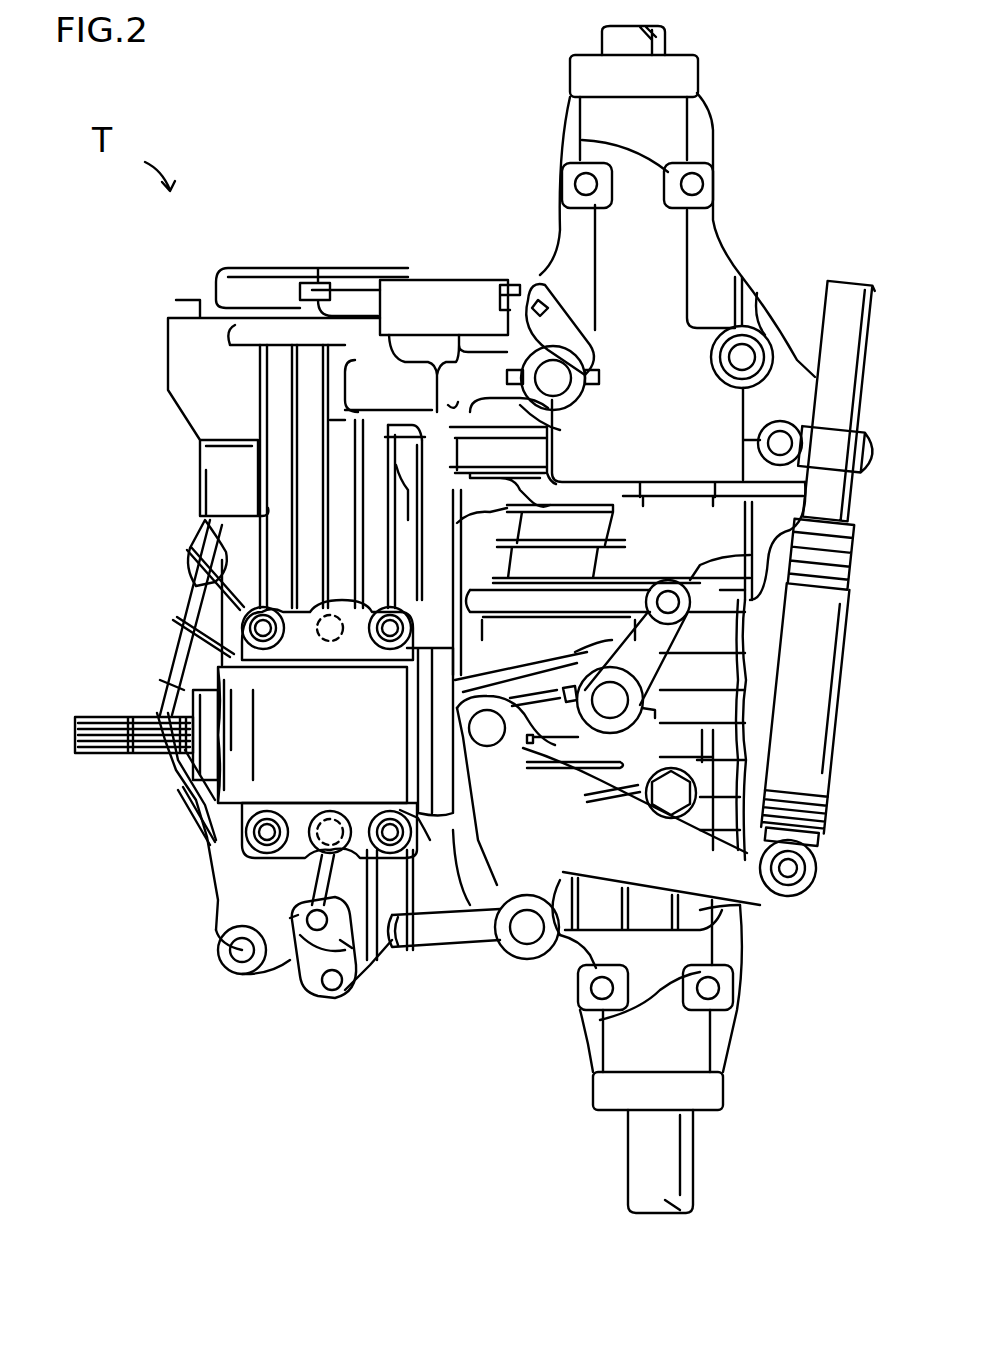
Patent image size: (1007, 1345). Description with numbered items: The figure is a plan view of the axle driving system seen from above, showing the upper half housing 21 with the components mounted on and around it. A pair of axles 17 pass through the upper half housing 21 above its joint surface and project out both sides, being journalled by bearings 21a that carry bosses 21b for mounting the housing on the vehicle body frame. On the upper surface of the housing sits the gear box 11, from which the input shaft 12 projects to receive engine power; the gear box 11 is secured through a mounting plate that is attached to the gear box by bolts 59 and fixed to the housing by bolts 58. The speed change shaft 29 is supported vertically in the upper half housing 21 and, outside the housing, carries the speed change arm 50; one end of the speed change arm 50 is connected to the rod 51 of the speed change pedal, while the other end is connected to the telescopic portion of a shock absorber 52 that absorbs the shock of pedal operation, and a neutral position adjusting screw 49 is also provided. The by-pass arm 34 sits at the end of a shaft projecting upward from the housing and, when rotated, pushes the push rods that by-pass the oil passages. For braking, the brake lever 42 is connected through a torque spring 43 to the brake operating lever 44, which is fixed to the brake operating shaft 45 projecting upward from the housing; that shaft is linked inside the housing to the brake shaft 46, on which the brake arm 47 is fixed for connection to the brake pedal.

The gear box 11 is at (236, 778).
The input shaft 12 is at (118, 717).
The axles 17 is at (598, 42).
The upper half housing 21 is at (183, 602).
The bearings 21a is at (590, 110).
The bosses 21b is at (588, 165).
The speed change shaft 29 is at (489, 740).
The by-pass arm 34 is at (315, 968).
The brake lever 42 is at (290, 278).
The torque spring 43 is at (437, 292).
The brake operating lever 44 is at (555, 300).
The brake operating shaft 45 is at (548, 375).
The brake shaft 46 is at (610, 703).
The brake arm 47 is at (660, 590).
The neutral position adjusting screw 49 is at (665, 805).
The speed change arm 50 is at (748, 885).
The rod 51 is at (447, 947).
The shock absorber 52 is at (812, 772).
The bolts 58 is at (253, 830).
The bolts 59 is at (300, 860).